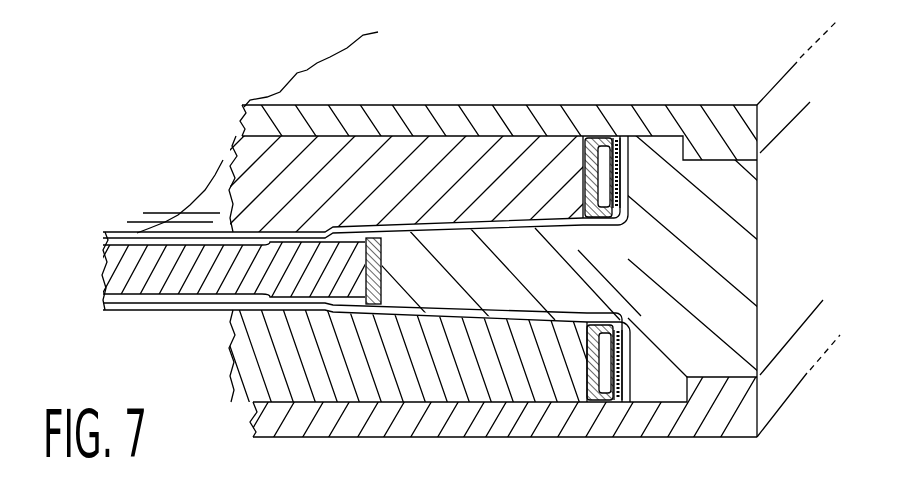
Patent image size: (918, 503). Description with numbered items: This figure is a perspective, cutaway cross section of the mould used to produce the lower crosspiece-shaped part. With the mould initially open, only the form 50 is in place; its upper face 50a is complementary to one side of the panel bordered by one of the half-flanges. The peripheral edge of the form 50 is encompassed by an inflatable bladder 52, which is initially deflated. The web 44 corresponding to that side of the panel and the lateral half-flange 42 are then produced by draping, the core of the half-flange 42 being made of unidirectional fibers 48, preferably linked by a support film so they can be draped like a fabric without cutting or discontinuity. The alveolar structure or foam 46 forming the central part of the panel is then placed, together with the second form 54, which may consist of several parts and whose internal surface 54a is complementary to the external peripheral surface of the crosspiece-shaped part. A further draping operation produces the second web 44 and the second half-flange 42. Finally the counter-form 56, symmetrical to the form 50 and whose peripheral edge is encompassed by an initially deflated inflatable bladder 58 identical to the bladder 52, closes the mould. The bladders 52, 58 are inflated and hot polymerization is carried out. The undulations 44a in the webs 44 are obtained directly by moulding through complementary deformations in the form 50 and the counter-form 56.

The lateral half-flange 42 is at (634, 163).
The web 44 is at (431, 308).
The undulations 44a is at (147, 220).
The alveolar structure or foam 46 is at (157, 278).
The unidirectional fibers 48 is at (614, 140).
The form 50 is at (290, 387).
The upper face of the form 50a is at (557, 310).
The inflatable bladder 52 is at (587, 377).
The second form 54 is at (717, 297).
The internal surface of the second form 54a is at (523, 222).
The counter-form 56 is at (287, 177).
The inflatable bladder 58 is at (585, 152).